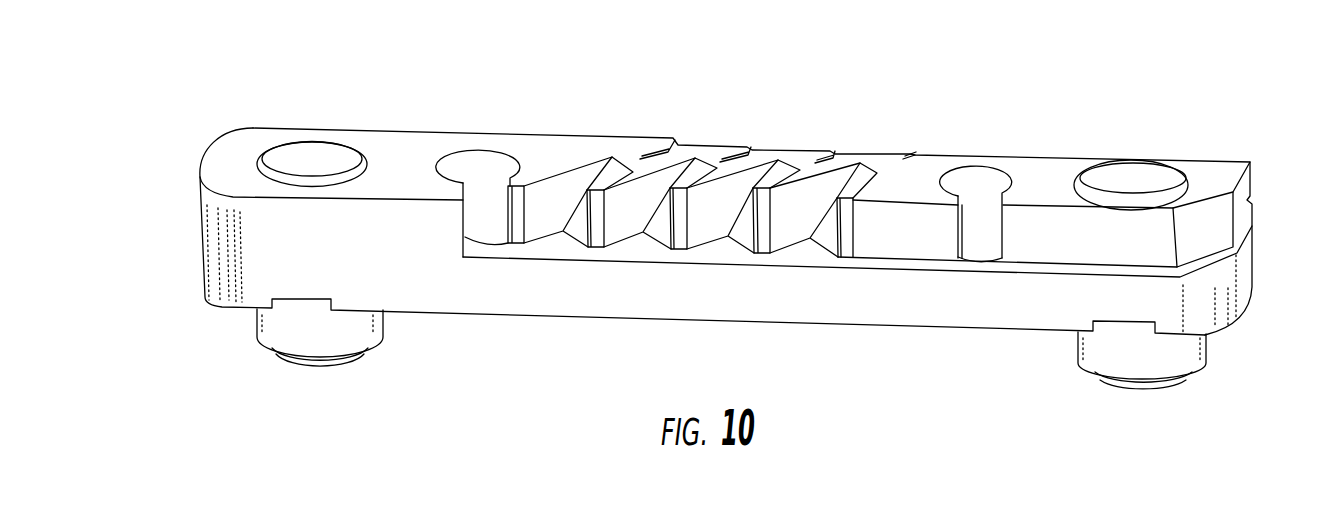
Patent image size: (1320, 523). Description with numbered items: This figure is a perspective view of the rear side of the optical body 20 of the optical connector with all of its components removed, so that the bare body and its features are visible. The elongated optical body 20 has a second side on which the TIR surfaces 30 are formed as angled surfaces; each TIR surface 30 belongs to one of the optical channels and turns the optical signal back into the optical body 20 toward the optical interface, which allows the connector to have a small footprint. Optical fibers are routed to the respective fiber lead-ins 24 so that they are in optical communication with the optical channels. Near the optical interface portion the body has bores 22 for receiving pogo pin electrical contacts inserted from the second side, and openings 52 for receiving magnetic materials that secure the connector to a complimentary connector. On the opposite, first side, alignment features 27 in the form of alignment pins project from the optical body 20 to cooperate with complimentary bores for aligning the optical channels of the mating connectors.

The optical body 20 is at (1214, 79).
The bores 22 is at (480, 163).
The fiber lead-ins 24 is at (676, 141).
The alignment features 27 is at (362, 357).
The TIR surface 30 is at (820, 193).
The openings 52 is at (332, 157).